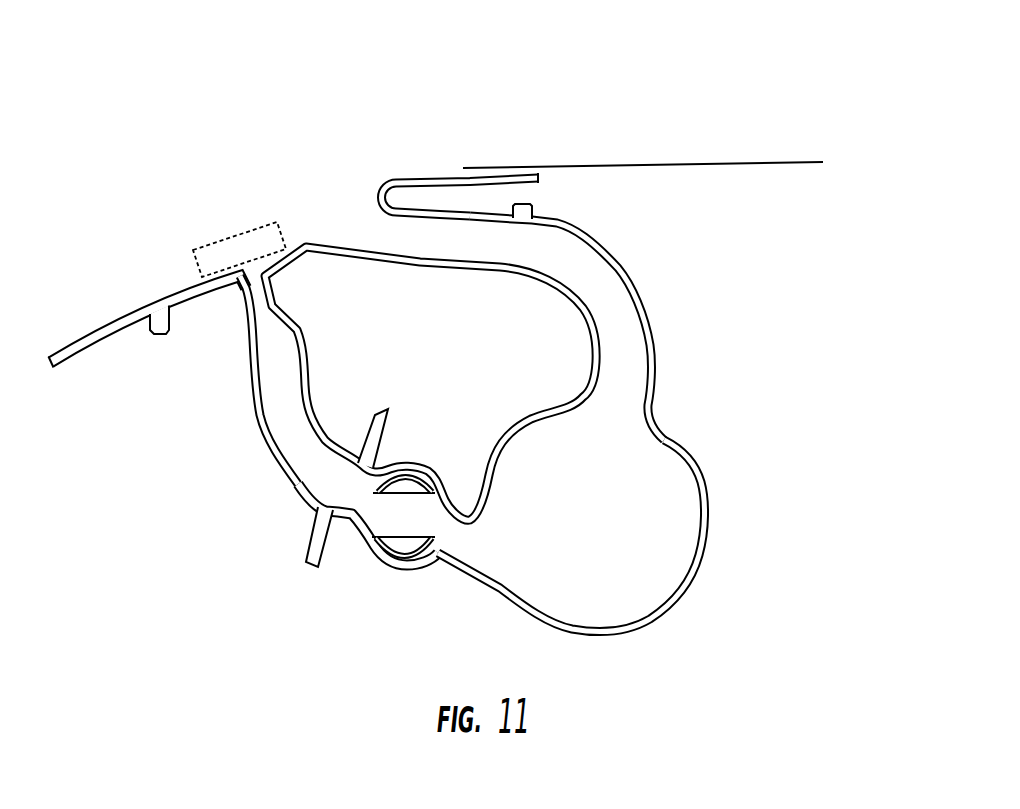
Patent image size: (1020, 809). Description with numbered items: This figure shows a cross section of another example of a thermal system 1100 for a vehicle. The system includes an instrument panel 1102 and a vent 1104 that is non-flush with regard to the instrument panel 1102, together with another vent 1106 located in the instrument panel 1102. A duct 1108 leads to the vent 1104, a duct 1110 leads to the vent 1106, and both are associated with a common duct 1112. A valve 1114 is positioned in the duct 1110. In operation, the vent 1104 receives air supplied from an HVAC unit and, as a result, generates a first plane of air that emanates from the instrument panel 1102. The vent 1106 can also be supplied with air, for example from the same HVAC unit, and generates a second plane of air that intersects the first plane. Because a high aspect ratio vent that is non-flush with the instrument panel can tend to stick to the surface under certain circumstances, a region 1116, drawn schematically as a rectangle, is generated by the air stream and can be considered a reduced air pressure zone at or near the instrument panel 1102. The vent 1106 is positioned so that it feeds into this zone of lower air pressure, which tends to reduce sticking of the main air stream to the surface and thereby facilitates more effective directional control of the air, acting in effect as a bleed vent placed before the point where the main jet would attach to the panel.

The thermal system 1100 is at (850, 106).
The instrument panel 1102 is at (408, 177).
The vent 1104 is at (370, 221).
The vent 1106 is at (257, 305).
The duct 1108 is at (627, 268).
The duct 1110 is at (309, 393).
The common duct 1112 is at (705, 497).
The valve 1114 is at (405, 478).
The region 1116 is at (252, 230).